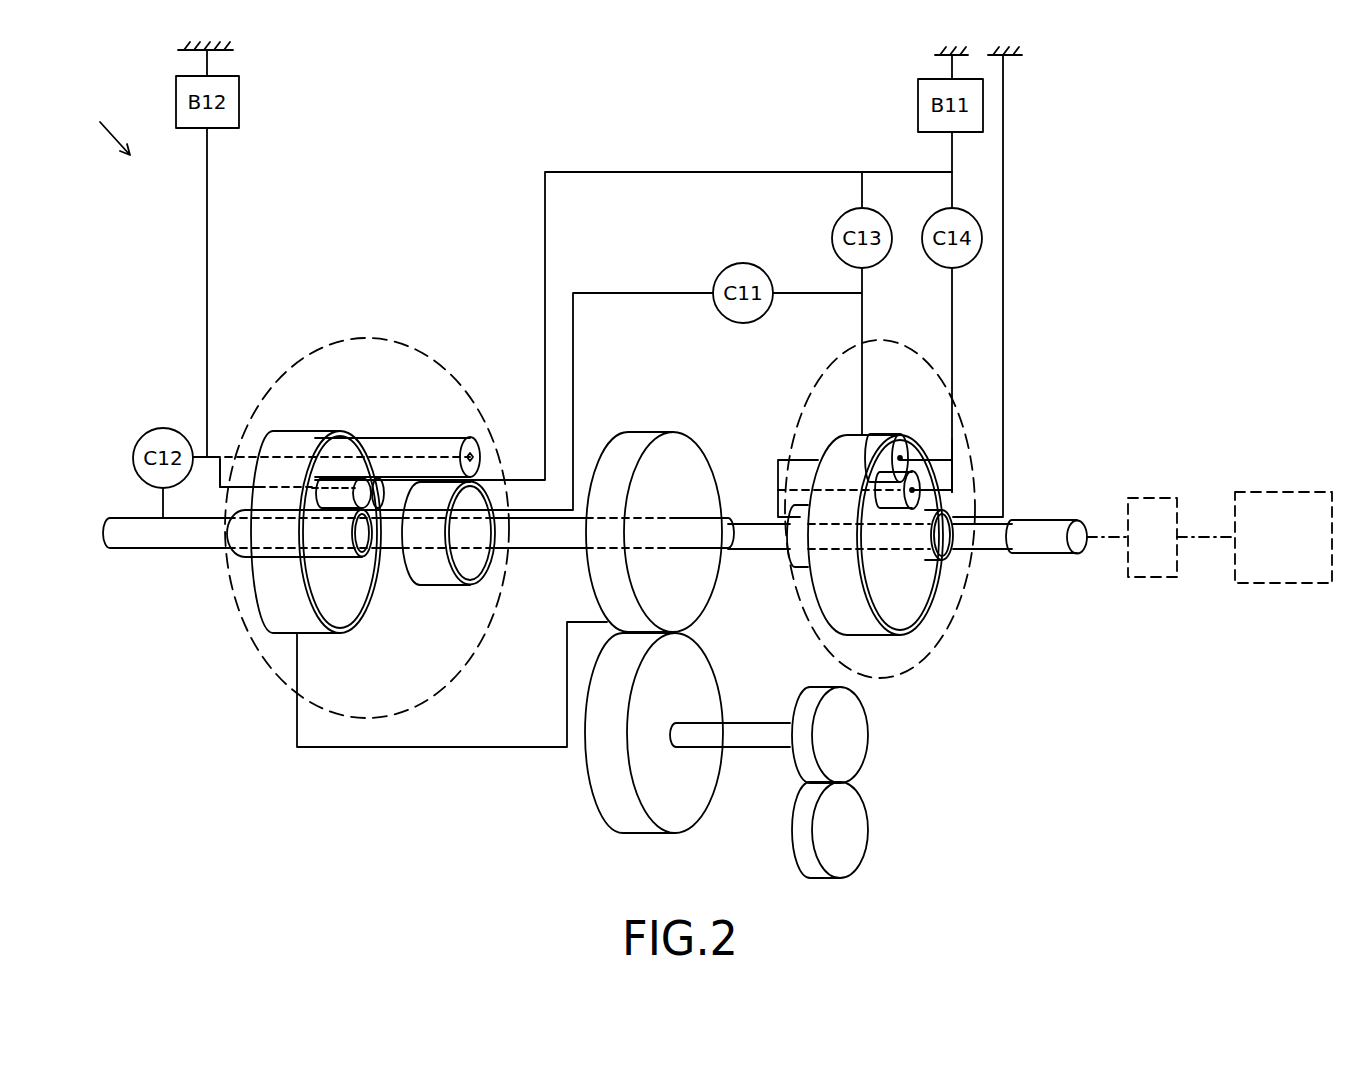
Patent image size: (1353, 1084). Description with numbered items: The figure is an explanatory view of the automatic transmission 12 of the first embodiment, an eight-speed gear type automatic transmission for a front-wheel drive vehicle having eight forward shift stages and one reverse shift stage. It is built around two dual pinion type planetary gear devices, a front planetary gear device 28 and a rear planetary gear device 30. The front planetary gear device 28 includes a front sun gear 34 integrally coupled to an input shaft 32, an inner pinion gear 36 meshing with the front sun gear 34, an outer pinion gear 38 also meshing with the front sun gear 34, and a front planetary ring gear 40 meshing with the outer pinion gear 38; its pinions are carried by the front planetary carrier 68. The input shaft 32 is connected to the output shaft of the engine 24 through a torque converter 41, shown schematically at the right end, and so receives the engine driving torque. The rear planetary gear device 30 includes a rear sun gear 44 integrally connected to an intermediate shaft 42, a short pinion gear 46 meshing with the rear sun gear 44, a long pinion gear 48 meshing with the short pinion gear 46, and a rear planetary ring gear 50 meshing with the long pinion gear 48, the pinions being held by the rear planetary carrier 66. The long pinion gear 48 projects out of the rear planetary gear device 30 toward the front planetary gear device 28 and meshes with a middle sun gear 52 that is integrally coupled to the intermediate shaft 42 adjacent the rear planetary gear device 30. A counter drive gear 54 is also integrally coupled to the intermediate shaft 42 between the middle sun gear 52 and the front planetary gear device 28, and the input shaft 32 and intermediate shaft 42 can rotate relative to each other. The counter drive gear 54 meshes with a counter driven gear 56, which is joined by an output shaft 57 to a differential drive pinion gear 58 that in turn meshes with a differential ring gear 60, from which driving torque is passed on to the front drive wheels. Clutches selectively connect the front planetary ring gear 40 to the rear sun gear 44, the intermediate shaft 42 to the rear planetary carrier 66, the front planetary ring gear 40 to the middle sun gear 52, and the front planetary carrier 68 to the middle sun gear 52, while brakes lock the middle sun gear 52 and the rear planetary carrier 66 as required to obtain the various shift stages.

The automatic transmission 12 is at (99, 132).
The engine 24 is at (1282, 492).
The front planetary gear device 28 is at (805, 393).
The rear planetary gear device 30 is at (367, 338).
The input shaft 32 is at (1048, 546).
The front sun gear 34 is at (920, 560).
The inner pinion gear 36 is at (930, 488).
The outer pinion gear 38 is at (898, 450).
The front planetary ring gear 40 is at (920, 615).
The torque converter 41 is at (1153, 497).
The intermediate shaft 42 is at (548, 543).
The rear sun gear 44 is at (242, 545).
The short pinion gear 46 is at (338, 492).
The long pinion gear 48 is at (414, 446).
The rear planetary ring gear 50 is at (353, 608).
The middle sun gear 52 is at (443, 582).
The counter drive gear 54 is at (645, 432).
The counter driven gear 56 is at (605, 792).
The output shaft 57 is at (748, 733).
The differential drive pinion gear 58 is at (855, 735).
The differential ring gear 60 is at (855, 828).
The rear planetary carrier 66 is at (232, 460).
The front planetary carrier 68 is at (942, 460).